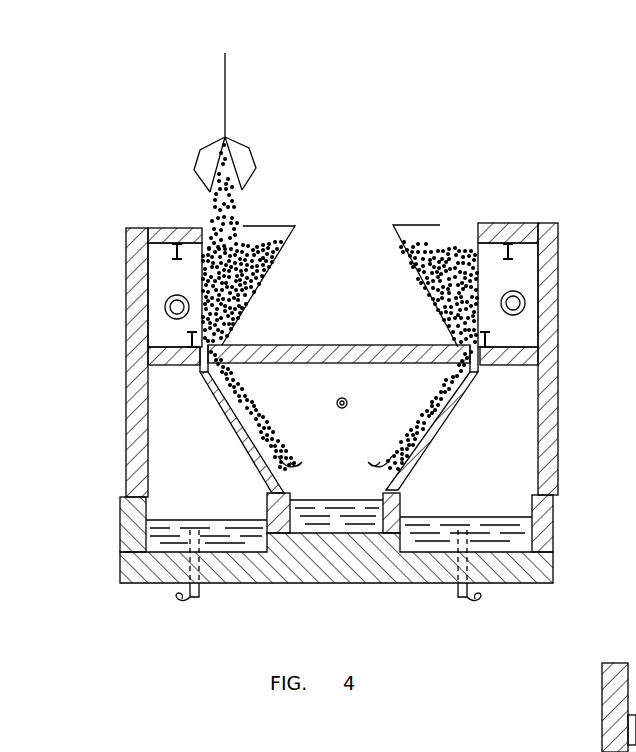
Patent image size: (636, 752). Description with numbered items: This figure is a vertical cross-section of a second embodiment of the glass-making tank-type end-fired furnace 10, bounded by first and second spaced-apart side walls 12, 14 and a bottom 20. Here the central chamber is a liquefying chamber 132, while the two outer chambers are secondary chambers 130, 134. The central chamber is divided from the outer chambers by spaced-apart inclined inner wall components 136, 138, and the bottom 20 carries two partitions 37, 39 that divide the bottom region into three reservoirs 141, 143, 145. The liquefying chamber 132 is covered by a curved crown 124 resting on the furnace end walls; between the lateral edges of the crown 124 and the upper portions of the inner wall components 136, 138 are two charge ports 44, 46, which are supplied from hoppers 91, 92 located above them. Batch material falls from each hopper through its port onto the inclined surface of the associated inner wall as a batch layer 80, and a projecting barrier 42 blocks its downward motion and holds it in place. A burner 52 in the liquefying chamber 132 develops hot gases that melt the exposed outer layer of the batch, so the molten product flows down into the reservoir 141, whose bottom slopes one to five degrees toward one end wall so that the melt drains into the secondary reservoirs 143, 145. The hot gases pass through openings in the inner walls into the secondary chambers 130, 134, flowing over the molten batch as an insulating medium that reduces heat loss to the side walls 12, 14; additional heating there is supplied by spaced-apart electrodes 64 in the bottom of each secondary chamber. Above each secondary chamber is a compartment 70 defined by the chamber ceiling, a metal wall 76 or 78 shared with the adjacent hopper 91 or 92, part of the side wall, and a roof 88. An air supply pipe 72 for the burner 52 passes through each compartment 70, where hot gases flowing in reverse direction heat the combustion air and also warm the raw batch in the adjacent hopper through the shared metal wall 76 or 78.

The glass-making tank-type end-fired furnace 10 is at (286, 592).
The first side wall 12 is at (126, 376).
The second side wall 14 is at (562, 460).
The bottom 20 is at (342, 583).
The partition 37 is at (268, 498).
The partition 39 is at (400, 514).
The projecting barrier 42 is at (308, 460).
The charge port 44 is at (208, 366).
The charge port 46 is at (460, 364).
The burner 52 is at (336, 404).
The electrodes 64 is at (208, 532).
The compartment 70 is at (166, 332).
The air supply pipe 72 is at (164, 302).
The metal wall 76 is at (210, 294).
The metal wall 78 is at (470, 306).
The batch layer 80 is at (174, 370).
The roof 88 is at (168, 234).
The hopper 91 is at (258, 278).
The hopper 92 is at (432, 290).
The curved crown 124 is at (278, 354).
The secondary chamber 130 is at (164, 402).
The liquefying chamber 132 is at (364, 368).
The secondary chamber 134 is at (558, 414).
The inner wall component 136 is at (248, 454).
The inner wall component 138 is at (432, 426).
The reservoir 141 is at (332, 514).
The secondary reservoir 143 is at (166, 520).
The secondary reservoir 145 is at (456, 522).